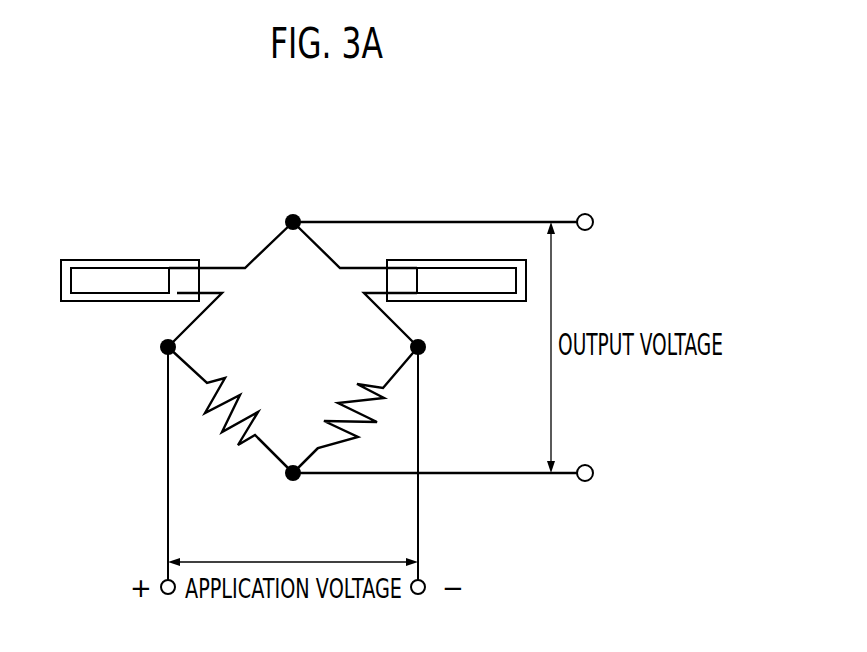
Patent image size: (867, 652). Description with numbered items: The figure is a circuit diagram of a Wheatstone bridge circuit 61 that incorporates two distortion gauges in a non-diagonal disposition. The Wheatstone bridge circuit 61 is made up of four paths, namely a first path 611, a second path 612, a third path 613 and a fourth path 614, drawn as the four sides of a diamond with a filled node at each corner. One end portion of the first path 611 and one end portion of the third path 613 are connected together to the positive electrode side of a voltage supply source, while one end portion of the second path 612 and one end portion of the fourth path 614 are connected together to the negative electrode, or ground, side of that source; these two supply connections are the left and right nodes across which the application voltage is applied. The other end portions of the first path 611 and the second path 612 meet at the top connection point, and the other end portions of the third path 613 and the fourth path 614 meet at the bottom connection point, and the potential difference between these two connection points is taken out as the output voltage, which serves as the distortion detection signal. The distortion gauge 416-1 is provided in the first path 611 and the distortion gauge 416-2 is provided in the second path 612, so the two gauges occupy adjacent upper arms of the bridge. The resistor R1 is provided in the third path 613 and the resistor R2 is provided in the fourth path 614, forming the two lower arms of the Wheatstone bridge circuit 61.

The Wheatstone bridge circuit 61 is at (299, 186).
The first path 611 is at (267, 245).
The second path 612 is at (323, 250).
The third path 613 is at (265, 452).
The fourth path 614 is at (328, 443).
The distortion gauge 416-1 is at (118, 260).
The distortion gauge 416-2 is at (427, 260).
The resistor R1 is at (237, 395).
The resistor R2 is at (343, 402).